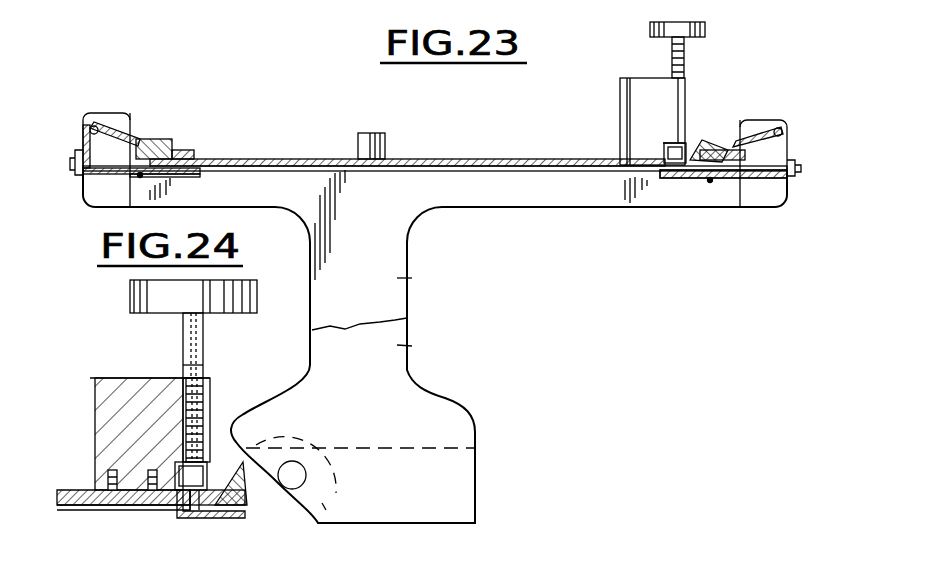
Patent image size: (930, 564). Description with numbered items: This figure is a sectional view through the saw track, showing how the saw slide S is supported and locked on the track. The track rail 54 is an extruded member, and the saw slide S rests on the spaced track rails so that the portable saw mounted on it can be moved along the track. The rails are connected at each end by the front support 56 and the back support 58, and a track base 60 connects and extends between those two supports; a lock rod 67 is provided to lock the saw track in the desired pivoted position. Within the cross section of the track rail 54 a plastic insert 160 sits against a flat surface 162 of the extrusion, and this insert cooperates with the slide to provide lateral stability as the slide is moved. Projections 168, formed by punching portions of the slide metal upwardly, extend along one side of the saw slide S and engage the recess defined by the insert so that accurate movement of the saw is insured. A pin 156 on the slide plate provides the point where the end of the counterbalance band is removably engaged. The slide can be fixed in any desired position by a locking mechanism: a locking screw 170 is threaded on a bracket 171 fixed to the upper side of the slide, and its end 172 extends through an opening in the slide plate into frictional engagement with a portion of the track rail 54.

In FIG. 23, the track rail 54 is at (112, 130).
In FIG. 23, the pin 156 is at (357, 131).
In FIG. 23, the saw slide S is at (446, 159).
In FIG. 23, the bracket 171 is at (620, 88).
In FIG. 24, the bracket 171 is at (130, 392).
In FIG. 23, the locking screw 170 is at (683, 53).
In FIG. 24, the locking screw 170 is at (203, 350).
In FIG. 23, the projections 168 is at (707, 147).
In FIG. 23, the flat surface 162 is at (195, 178).
In FIG. 23, the end of locking screw 172 is at (674, 178).
In FIG. 24, the end of locking screw 172 is at (240, 500).
In FIG. 23, the plastic insert 160 is at (140, 175).
In FIG. 23, the back support 58 is at (412, 278).
In FIG. 23, the front support 56 is at (412, 346).
In FIG. 23, the track base 60 is at (475, 448).
In FIG. 23, the lock rod 67 is at (338, 495).